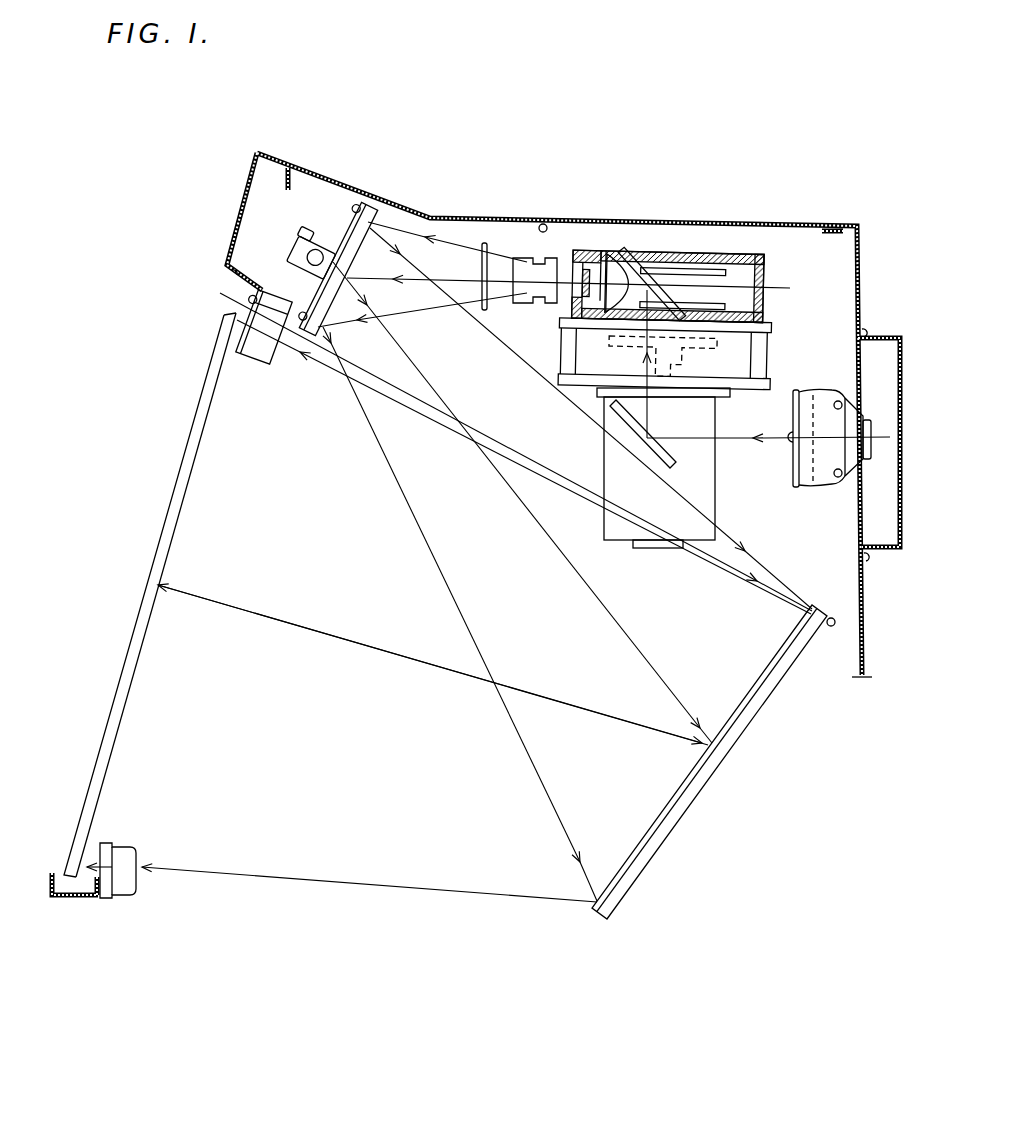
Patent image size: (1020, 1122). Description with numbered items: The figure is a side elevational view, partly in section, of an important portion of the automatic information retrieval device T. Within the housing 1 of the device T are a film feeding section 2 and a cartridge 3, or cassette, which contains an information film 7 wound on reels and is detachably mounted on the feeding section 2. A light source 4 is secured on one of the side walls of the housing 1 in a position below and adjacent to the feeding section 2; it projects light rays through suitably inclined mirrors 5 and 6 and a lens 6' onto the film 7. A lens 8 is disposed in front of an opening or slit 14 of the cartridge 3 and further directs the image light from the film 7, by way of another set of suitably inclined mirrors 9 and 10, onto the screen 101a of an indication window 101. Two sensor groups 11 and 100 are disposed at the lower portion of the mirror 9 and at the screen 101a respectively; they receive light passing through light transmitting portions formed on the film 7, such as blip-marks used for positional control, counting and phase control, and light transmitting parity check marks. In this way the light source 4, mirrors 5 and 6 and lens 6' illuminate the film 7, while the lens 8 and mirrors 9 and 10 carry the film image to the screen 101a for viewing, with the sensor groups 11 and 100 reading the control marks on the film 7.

The automatic information retrieval device T is at (796, 200).
The housing 1 is at (862, 268).
The film feeding section 2 is at (782, 338).
The cartridge 3 is at (770, 270).
The light source 4 is at (810, 400).
The mirror 5 is at (672, 468).
The mirror 6 is at (656, 232).
The lens 6' is at (633, 227).
The information film 7 is at (598, 252).
The lens 8 is at (523, 263).
The mirror 9 is at (369, 217).
The mirror 10 is at (783, 672).
The sensor group 11 is at (262, 362).
The opening or slit 14 is at (573, 262).
The sensor group 100 is at (126, 895).
The indication window 101 is at (87, 793).
The screen 101a is at (122, 668).